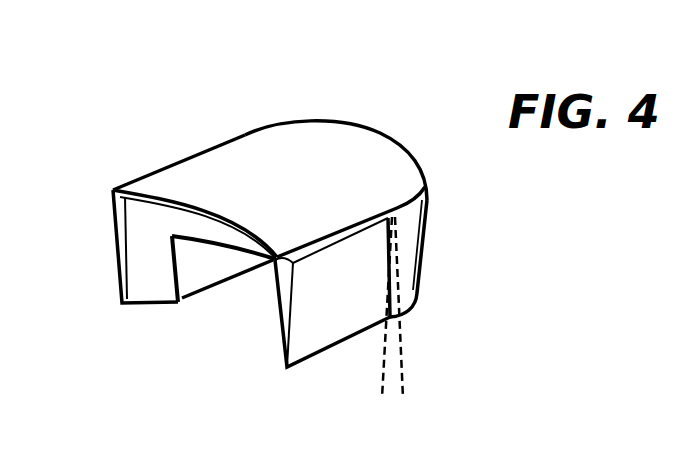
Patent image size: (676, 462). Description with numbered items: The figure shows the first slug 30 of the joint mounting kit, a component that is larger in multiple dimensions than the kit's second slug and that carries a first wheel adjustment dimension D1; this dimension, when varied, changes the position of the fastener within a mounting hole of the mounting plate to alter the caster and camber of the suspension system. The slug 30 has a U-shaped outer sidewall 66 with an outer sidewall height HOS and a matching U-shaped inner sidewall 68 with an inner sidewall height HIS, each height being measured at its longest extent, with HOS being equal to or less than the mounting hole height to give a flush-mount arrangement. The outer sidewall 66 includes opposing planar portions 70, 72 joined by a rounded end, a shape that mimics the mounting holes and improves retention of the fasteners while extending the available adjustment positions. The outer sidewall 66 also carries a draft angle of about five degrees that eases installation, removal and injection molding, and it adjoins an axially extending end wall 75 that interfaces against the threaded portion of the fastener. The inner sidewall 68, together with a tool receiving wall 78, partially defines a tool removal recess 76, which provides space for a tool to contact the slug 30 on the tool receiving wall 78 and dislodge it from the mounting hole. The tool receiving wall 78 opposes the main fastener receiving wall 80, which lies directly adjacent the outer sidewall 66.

The first slug 30 is at (380, 52).
The outer sidewall 66 is at (410, 255).
The inner sidewall 68 is at (200, 273).
The planar portion 70 is at (328, 327).
The planar portion 72 is at (118, 190).
The axially extending end wall 75 is at (143, 312).
The tool removal recess 76 is at (188, 305).
The tool receiving wall 78 is at (230, 282).
The main fastener receiving wall 80 is at (262, 140).
The first wheel adjustment dimension D1 is at (378, 138).
The outer sidewall height HOS is at (504, 290).
The inner sidewall height HIS is at (78, 233).